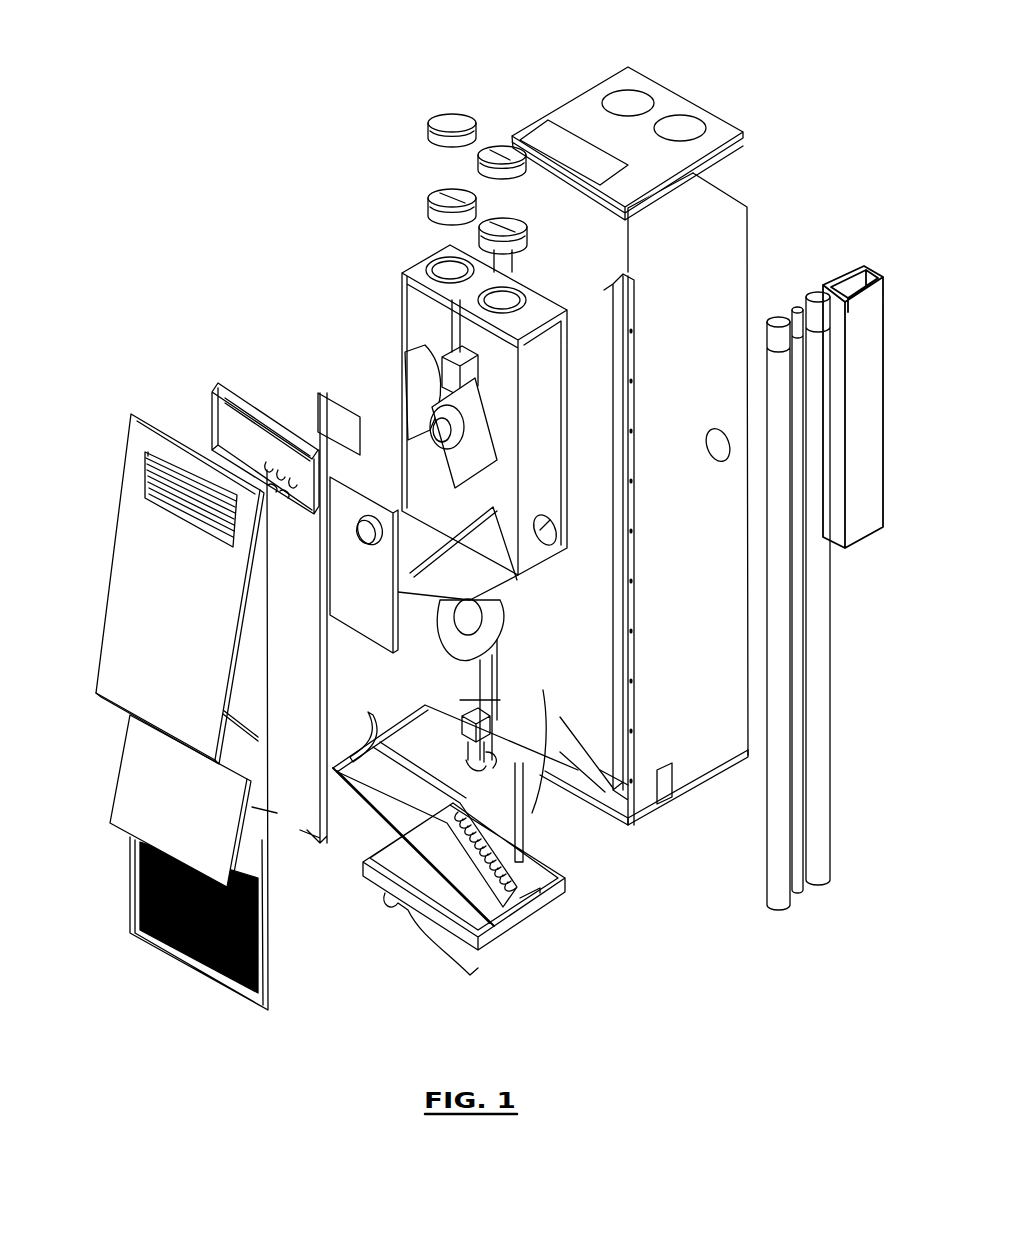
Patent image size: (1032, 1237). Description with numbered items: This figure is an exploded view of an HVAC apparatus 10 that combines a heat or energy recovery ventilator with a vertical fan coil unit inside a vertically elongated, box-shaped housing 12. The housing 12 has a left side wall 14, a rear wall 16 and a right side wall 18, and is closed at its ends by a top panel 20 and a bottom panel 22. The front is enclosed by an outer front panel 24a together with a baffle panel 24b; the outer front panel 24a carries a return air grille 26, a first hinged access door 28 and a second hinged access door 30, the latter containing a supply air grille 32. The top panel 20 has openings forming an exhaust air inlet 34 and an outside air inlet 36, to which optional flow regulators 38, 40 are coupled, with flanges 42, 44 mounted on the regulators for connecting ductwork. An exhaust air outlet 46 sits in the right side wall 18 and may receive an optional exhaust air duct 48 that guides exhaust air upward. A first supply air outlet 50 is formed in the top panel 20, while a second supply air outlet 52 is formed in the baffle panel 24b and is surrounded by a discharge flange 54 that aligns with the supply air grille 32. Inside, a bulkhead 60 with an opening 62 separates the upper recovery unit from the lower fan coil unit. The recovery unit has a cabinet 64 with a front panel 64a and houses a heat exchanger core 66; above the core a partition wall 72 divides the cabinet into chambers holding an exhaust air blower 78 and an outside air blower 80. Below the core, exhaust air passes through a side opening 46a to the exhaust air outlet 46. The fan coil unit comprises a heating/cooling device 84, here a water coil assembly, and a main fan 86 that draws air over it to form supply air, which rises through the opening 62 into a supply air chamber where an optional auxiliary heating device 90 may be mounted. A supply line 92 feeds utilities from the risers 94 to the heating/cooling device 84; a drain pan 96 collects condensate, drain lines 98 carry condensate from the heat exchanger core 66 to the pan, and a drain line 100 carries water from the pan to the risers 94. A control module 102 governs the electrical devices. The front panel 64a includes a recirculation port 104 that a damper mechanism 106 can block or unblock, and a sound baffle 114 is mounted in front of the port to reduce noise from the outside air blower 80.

The apparatus 10 is at (228, 134).
The housing 12 is at (730, 92).
The left side wall 14 is at (610, 240).
The rear wall 16 is at (720, 192).
The right side wall 18 is at (737, 236).
The top panel 20 is at (727, 128).
The bottom panel 22 is at (612, 805).
The outer front panel 24a is at (214, 740).
The baffle panel 24b is at (318, 835).
The return air grille 26 is at (140, 935).
The first hinged access door 28 is at (140, 768).
The second hinged access door 30 is at (170, 589).
The supply air grille 32 is at (152, 468).
The exhaust air inlet 34 is at (628, 100).
The outside air inlet 36 is at (680, 126).
The flow regulator 38 is at (428, 198).
The flow regulator 40 is at (479, 232).
The flange 42 is at (428, 122).
The flange 44 is at (478, 158).
The exhaust air outlet 46 is at (718, 438).
The side opening 46a is at (540, 522).
The exhaust air duct 48 is at (866, 292).
The first supply air outlet 50 is at (545, 138).
The second supply air outlet 52 is at (222, 458).
The discharge flange 54 is at (225, 418).
The bulkhead 60 is at (500, 622).
The opening 62 is at (490, 590).
The cabinet 64 is at (403, 285).
The front panel 64a is at (364, 582).
The heat exchanger core 66 is at (470, 525).
The partition wall 72 is at (450, 312).
The exhaust air blower 78 is at (400, 400).
The outside air blower 80 is at (505, 468).
The heating/cooling device 84 is at (515, 915).
The main fan 86 is at (492, 632).
The auxiliary heating device 90 is at (300, 518).
The supply line 92 is at (428, 775).
The risers 94 is at (772, 910).
The drain pan 96 is at (520, 910).
The drain lines 98 is at (470, 693).
The drain line 100 is at (484, 975).
The control module 102 is at (615, 530).
The recirculation port 104 is at (366, 545).
The damper mechanism 106 is at (468, 372).
The sound baffle 114 is at (320, 415).